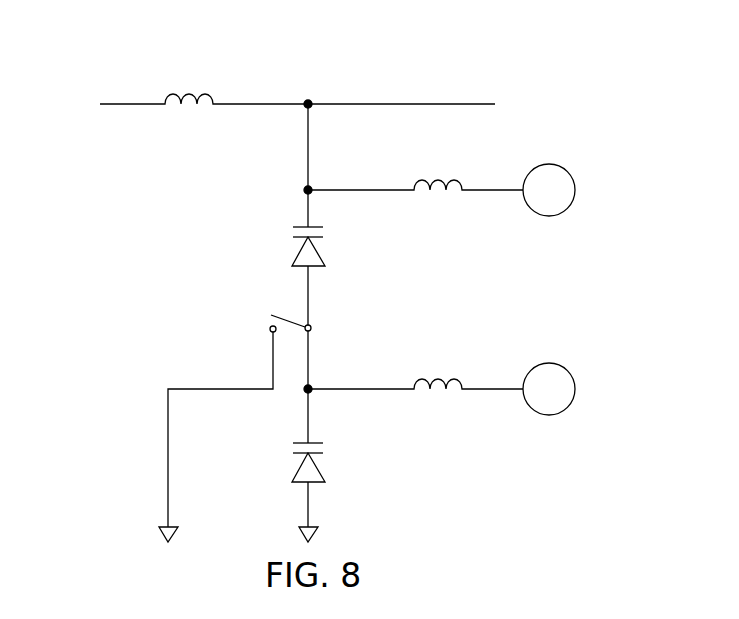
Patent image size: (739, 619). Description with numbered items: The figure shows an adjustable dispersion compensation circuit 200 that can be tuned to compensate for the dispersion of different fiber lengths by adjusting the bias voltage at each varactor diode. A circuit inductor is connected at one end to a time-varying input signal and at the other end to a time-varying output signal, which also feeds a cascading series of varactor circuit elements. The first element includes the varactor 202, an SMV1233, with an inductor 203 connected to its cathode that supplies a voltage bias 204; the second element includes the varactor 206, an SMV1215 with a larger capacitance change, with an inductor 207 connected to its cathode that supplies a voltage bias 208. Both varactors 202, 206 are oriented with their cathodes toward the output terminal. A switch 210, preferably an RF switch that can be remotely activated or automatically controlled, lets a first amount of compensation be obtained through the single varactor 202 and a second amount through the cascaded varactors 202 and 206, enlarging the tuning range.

The adjustable dispersion compensation circuit 200 is at (643, 64).
The varactor D1 202 is at (297, 227).
The inductor L1 203 is at (442, 195).
The voltage bias 204 is at (575, 190).
The varactor D2 206 is at (297, 443).
The inductor L2 207 is at (442, 394).
The voltage bias 208 is at (575, 389).
The switch 210 is at (312, 330).